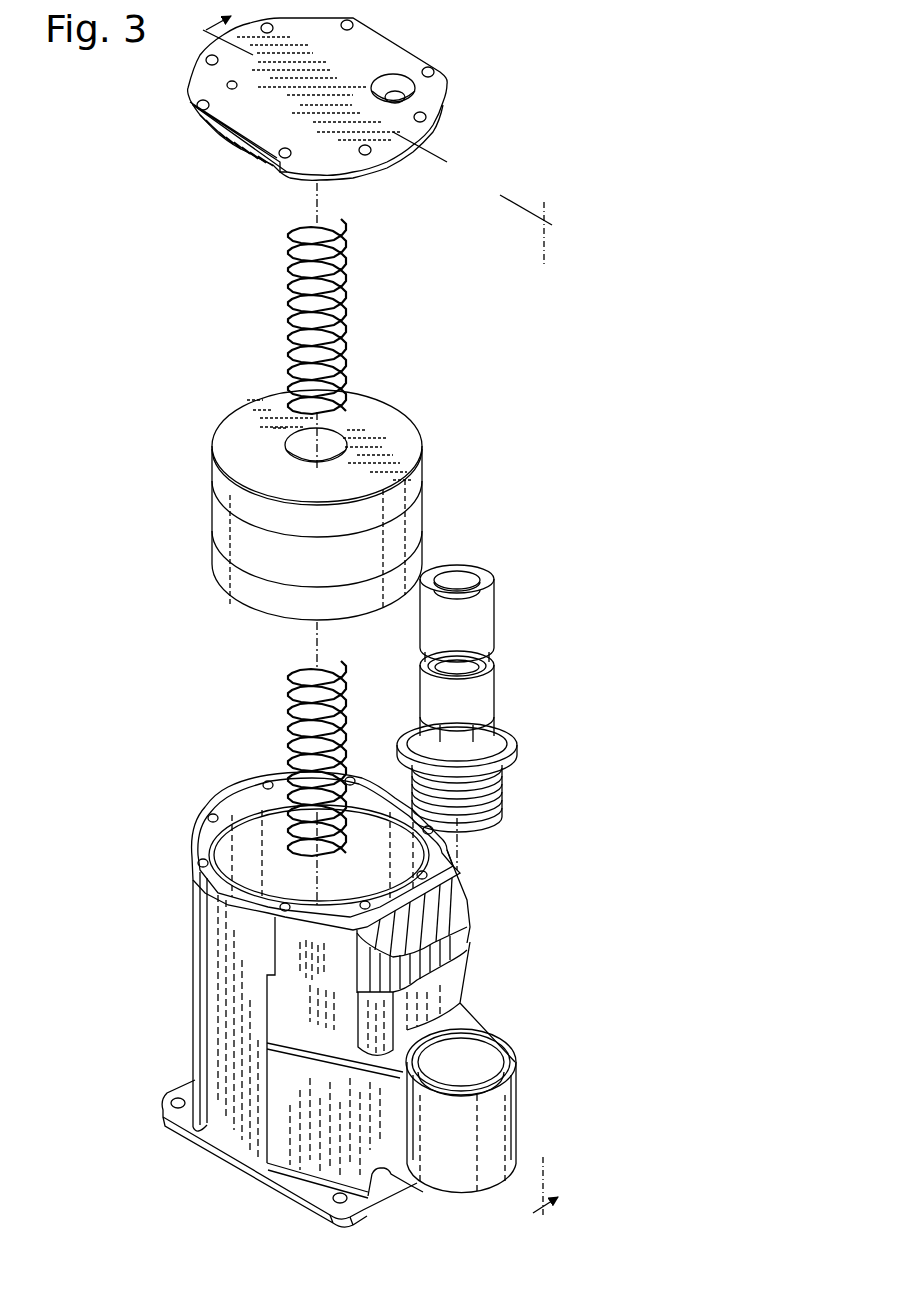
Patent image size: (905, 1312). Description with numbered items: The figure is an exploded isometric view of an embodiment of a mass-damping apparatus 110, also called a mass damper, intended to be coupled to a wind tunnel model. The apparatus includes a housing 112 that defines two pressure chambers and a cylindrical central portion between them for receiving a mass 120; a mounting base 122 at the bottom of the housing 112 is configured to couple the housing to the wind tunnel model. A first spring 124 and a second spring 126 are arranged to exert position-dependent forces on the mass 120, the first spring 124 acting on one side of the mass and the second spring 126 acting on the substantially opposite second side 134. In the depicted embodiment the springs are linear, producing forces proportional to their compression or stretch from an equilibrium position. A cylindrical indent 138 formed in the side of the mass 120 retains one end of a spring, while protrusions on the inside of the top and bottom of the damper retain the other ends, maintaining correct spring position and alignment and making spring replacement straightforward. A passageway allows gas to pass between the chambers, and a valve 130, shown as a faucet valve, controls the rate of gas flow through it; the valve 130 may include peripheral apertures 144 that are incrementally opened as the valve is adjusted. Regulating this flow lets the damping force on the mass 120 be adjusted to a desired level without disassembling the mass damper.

The mass-damping apparatus 110 is at (528, 45).
The housing 112 is at (191, 870).
The mass 120 is at (419, 508).
The mounting base 122 is at (163, 1110).
The first spring 124 is at (288, 745).
The second spring 126 is at (288, 318).
The valve 130 is at (541, 660).
The second side of mass 134 is at (235, 435).
The cylindrical indent 138 is at (333, 445).
The peripheral apertures 144 is at (410, 795).